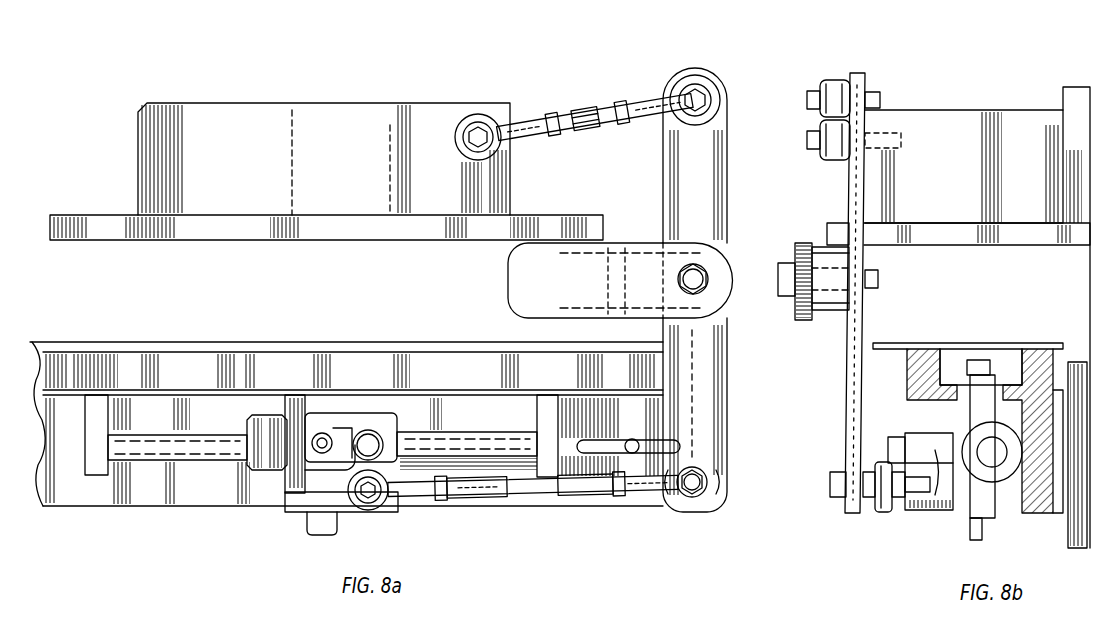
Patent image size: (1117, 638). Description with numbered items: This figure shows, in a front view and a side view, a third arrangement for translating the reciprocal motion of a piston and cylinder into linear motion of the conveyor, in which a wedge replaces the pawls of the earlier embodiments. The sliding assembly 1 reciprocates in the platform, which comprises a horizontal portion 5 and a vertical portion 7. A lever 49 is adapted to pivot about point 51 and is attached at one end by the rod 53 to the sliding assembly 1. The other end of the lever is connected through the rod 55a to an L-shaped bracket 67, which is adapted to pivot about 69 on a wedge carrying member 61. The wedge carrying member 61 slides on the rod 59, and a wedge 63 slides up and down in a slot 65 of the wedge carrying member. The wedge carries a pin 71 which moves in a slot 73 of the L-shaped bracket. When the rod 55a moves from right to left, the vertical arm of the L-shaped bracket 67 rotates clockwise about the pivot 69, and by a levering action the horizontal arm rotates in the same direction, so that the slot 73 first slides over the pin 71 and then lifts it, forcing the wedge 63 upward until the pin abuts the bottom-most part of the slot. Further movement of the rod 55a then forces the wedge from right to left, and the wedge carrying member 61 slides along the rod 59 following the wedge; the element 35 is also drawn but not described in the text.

In FIG. 8A, the sliding assembly 1 is at (405, 89).
In FIG. 8A, the horizontal portion 5 is at (498, 225).
In FIG. 8B, the horizontal portion 5 is at (942, 230).
In FIG. 8B, the vertical portion 7 is at (1072, 103).
In FIG. 8B, the slot 35 is at (977, 358).
In FIG. 8A, the lever 49 is at (729, 174).
In FIG. 8B, the lever 49 is at (850, 186).
In FIG. 8A, the pivot point 51 is at (728, 270).
In FIG. 8B, the pivot point 51 is at (782, 268).
In FIG. 8A, the rod 53 is at (556, 128).
In FIG. 8A, the rod 55a is at (590, 490).
In FIG. 8A, the rod 59 is at (210, 438).
In FIG. 8B, the rod 59 is at (988, 458).
In FIG. 8A, the wedge carrying member 61 is at (305, 500).
In FIG. 8A, the wedge 63 is at (315, 530).
In FIG. 8B, the wedge 63 is at (978, 525).
In FIG. 8A, the slot 65 is at (310, 420).
In FIG. 8A, the L-shaped bracket 67 is at (350, 430).
In FIG. 8A, the pivot 69 is at (385, 420).
In FIG. 8B, the pivot 69 is at (893, 440).
In FIG. 8A, the pin 71 is at (342, 440).
In FIG. 8A, the slot 73 is at (324, 436).